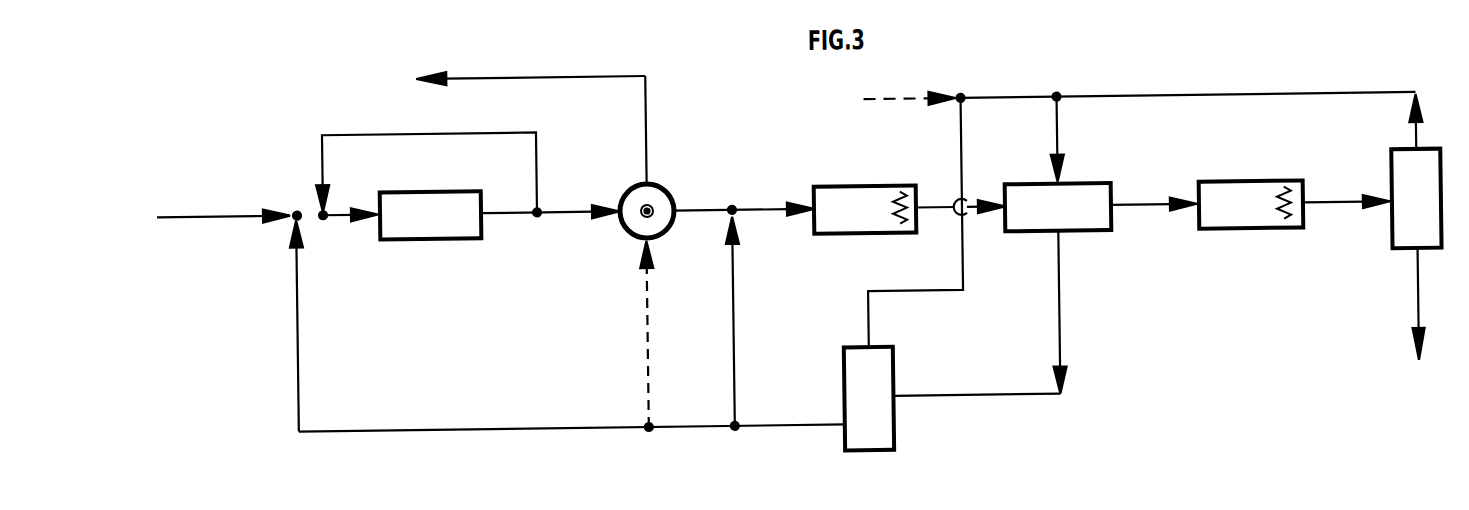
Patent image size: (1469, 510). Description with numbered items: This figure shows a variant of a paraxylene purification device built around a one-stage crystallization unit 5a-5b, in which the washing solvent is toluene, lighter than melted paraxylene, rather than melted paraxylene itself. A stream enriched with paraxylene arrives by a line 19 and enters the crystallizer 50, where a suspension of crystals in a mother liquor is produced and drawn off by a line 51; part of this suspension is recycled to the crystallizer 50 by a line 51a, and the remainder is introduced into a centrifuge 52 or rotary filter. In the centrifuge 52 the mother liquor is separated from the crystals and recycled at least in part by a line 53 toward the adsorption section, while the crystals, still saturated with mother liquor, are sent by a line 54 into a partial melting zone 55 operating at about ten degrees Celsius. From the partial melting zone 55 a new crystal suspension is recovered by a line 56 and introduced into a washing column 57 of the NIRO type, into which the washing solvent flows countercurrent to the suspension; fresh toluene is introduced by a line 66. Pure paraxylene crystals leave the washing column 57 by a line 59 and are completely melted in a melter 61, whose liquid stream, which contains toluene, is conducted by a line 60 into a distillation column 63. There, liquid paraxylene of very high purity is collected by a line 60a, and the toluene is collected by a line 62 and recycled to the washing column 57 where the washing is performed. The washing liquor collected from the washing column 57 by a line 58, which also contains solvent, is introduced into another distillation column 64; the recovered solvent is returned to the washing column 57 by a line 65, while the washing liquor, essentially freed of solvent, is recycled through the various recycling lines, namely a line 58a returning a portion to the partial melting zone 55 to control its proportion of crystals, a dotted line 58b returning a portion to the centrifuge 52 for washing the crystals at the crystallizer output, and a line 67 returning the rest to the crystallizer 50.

The line 19 is at (195, 211).
The crystallizer 50 is at (417, 224).
The line 51 is at (552, 213).
The line 51a is at (537, 136).
The centrifuge 52 is at (659, 186).
The line 53 is at (647, 82).
The line 54 is at (718, 211).
The partial melting zone 55 is at (845, 224).
The line 56 is at (942, 211).
The washing column 57 is at (1045, 224).
The line 58 is at (1033, 399).
The line 58a is at (732, 325).
The line 58b is at (646, 327).
The line 59 is at (1142, 211).
The line 60 is at (1333, 211).
The line 60a is at (1417, 307).
The melter 61 is at (1237, 224).
The line 62 is at (1188, 102).
The distillation column 63 is at (1404, 227).
The distillation column 64 is at (869, 399).
The line 65 is at (867, 292).
The line 66 is at (883, 102).
The recycling line 67 is at (722, 427).
The one-stage crystallization unit 5a-5b is at (238, 341).